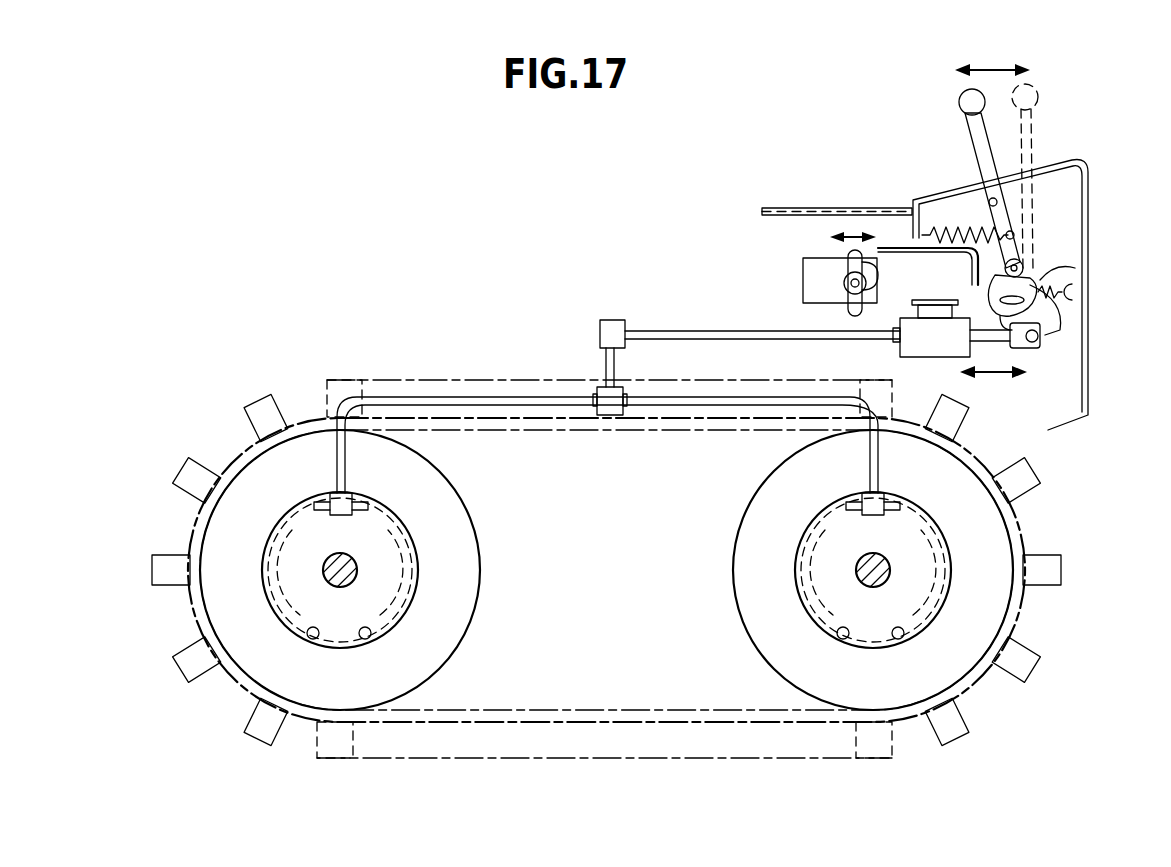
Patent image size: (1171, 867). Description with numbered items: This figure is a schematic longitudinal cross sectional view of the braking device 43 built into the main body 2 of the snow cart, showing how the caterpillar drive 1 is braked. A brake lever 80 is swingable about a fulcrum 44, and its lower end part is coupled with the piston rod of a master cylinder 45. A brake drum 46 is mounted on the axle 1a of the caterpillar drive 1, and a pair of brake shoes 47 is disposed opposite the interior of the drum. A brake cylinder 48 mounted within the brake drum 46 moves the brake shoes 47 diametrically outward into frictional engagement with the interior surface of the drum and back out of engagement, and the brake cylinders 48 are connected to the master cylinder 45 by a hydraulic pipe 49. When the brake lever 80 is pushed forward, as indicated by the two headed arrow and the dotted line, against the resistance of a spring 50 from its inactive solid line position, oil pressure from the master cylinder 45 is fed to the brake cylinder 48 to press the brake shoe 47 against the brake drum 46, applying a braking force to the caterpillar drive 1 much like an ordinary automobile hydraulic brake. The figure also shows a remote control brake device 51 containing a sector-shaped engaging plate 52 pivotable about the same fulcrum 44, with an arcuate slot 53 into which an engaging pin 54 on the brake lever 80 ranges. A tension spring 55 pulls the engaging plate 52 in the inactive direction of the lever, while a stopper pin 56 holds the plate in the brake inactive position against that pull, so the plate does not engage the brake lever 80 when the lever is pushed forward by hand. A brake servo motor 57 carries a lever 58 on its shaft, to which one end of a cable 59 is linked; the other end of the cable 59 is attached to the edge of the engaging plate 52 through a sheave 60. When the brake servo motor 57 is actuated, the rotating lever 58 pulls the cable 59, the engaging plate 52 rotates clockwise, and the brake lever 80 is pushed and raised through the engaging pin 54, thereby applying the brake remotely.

The caterpillar drive 1 is at (535, 762).
The axle 1a is at (358, 568).
The main body 2 is at (792, 210).
The braking device 43 is at (693, 245).
The fulcrum 44 is at (1033, 236).
The master cylinder 45 is at (945, 343).
The brake drum 46 is at (338, 638).
The brake shoe 47 is at (268, 580).
The brake cylinder 48 is at (352, 497).
The hydraulic pipe 49 is at (650, 322).
The spring 50 is at (957, 235).
The remote control brake device 51 is at (770, 279).
The engaging plate 52 is at (1045, 312).
The arcuate slot 53 is at (1005, 352).
The engaging pin 54 is at (1042, 300).
The tension spring 55 is at (1076, 292).
The stopper pin 56 is at (1072, 262).
The brake servo motor 57 is at (815, 283).
The lever 58 is at (850, 245).
The cable 59 is at (927, 236).
The sheave 60 is at (972, 262).
The brake lever 80 is at (958, 100).